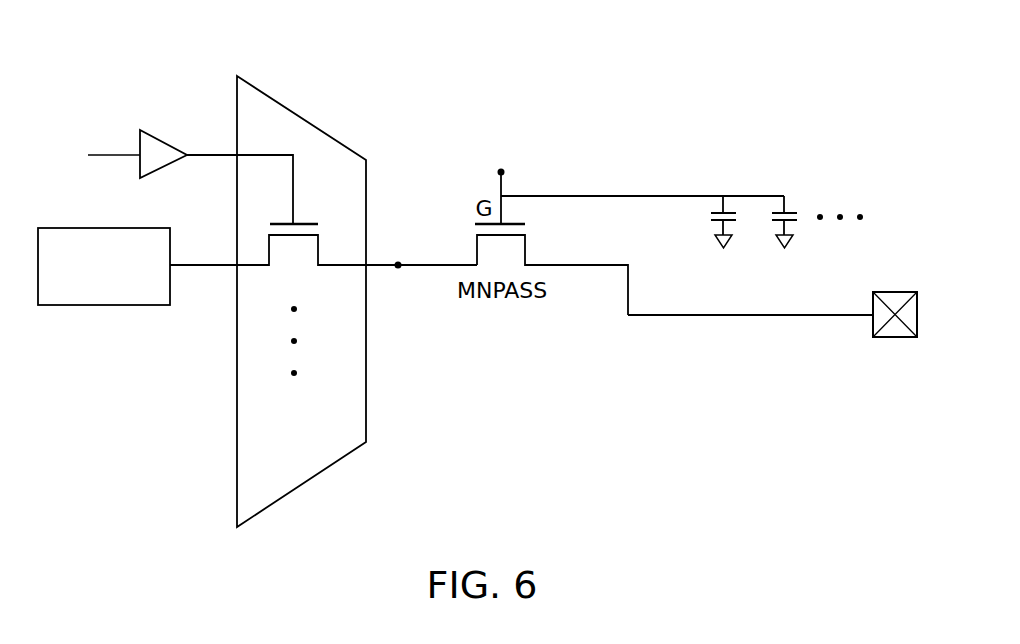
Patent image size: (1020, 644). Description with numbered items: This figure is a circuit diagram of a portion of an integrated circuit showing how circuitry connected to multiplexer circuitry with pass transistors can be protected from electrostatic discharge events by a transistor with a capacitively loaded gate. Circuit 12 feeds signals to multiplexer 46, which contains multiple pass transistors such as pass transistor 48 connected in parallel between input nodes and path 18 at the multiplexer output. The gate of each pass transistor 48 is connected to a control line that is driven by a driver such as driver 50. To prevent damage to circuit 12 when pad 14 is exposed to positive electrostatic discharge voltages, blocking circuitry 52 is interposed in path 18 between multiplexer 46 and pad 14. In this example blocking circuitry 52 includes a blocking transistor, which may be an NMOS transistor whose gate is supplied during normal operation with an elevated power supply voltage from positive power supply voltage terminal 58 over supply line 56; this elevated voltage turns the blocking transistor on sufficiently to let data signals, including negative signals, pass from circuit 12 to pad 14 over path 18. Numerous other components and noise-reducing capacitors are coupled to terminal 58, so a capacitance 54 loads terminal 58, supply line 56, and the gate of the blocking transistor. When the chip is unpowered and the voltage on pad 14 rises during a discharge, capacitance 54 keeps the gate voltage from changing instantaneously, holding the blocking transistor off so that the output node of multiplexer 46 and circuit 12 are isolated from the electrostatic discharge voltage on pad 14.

The circuit 12 is at (103, 305).
The pad 14 is at (890, 292).
The path 18 is at (667, 315).
The multiplexer 46 is at (317, 125).
The pass transistor 48 is at (338, 220).
The driver 50 is at (160, 138).
The blocking circuitry 52 is at (753, 188).
The capacitance 54 is at (760, 228).
The power supply line 56 is at (660, 196).
The positive power supply voltage terminal 58 is at (497, 172).